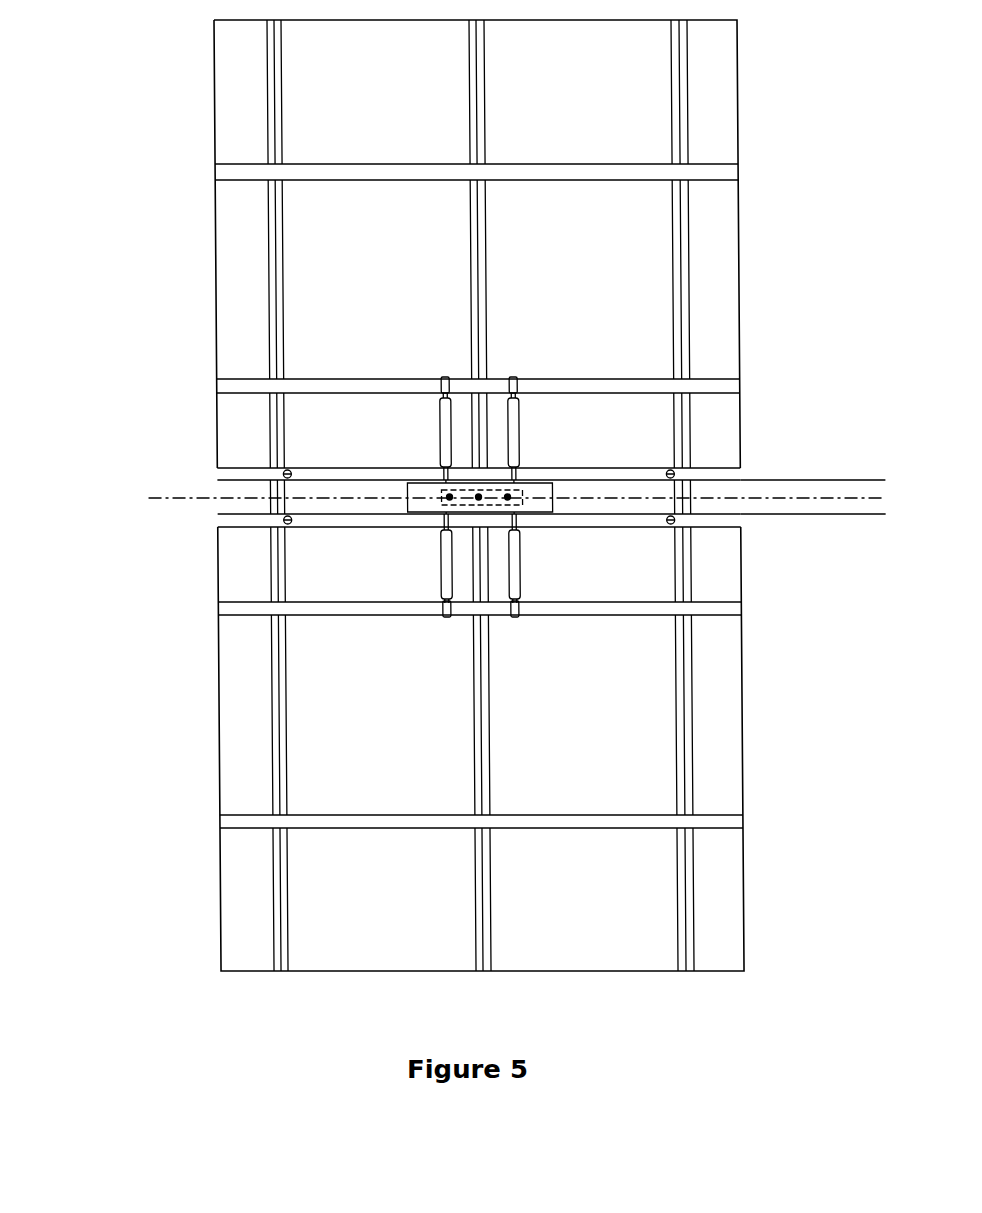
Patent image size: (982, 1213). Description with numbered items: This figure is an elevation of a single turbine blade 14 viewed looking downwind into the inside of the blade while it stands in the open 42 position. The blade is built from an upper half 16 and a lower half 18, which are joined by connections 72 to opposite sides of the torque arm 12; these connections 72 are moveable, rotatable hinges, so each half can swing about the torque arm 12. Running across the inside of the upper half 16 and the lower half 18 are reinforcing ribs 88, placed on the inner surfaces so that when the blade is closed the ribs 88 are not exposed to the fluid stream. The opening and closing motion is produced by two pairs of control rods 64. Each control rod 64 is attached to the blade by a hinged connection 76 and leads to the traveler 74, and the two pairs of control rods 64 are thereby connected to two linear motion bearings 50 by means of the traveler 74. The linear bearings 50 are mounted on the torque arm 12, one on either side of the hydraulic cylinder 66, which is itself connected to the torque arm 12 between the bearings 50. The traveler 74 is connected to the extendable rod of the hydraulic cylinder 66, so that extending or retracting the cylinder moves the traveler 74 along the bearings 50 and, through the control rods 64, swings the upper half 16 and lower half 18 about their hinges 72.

The torque arm 12 is at (787, 488).
The turbine blade 14 is at (150, 696).
The upper half 16 is at (722, 103).
The lower half 18 is at (723, 787).
The open position 42 is at (129, 397).
The linear bearing 50 is at (431, 468).
The control rod 64 is at (439, 417).
The hydraulic cylinder 66 is at (479, 500).
The connection 72 is at (280, 475).
The traveler 74 is at (506, 500).
The hinged connection 76 is at (440, 377).
The reinforcing rib 88 is at (481, 218).